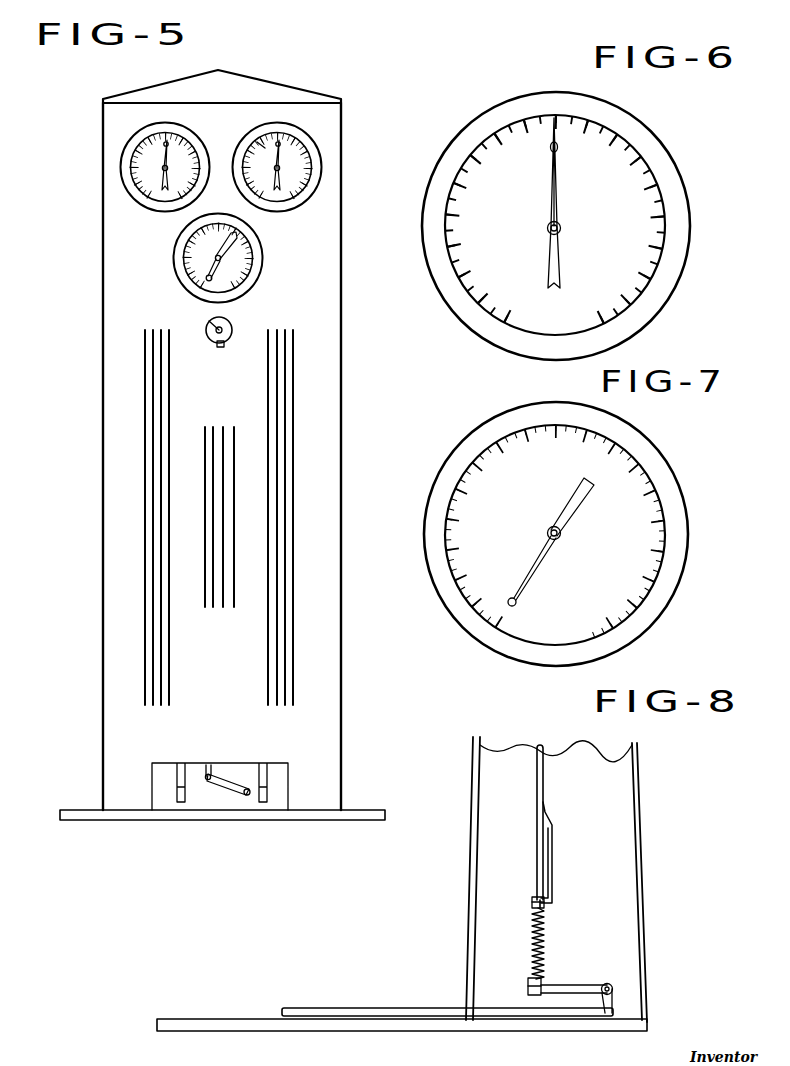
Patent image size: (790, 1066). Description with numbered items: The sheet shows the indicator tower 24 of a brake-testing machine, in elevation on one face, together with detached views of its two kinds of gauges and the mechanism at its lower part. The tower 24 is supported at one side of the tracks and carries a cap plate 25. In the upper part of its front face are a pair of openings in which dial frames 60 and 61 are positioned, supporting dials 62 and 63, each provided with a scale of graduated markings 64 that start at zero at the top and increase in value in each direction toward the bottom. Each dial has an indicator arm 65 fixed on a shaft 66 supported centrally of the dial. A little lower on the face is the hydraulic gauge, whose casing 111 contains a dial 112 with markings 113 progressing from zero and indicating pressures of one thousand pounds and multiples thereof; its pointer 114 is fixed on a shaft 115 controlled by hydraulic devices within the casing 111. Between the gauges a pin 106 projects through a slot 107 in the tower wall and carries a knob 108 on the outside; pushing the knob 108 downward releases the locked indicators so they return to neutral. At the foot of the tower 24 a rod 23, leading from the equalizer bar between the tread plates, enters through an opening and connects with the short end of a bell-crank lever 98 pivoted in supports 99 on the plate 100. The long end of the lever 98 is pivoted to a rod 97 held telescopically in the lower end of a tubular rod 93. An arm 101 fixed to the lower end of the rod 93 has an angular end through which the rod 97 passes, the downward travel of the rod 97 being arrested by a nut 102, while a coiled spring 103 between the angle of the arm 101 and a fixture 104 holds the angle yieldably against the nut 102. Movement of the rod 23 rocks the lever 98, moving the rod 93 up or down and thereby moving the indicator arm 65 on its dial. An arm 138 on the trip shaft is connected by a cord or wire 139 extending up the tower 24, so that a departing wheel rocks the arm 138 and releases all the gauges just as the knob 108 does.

In FIG. 8, the rod 23 is at (380, 1007).
In FIG. 5, the tower 24 is at (196, 456).
In FIG. 8, the tower 24 is at (627, 812).
In FIG. 5, the cap plate 25 is at (273, 88).
In FIG. 5, the dial frame 60 is at (120, 160).
In FIG. 5, the dial frame 61 is at (320, 157).
In FIG. 6, the dial frame 61 is at (673, 197).
In FIG. 5, the dial 62 is at (140, 168).
In FIG. 5, the dial 63 is at (293, 171).
In FIG. 6, the dial 63 is at (555, 225).
In FIG. 5, the graduated markings 64 is at (260, 143).
In FIG. 6, the graduated markings 64 is at (507, 130).
In FIG. 5, the indicator arm 65 is at (280, 157).
In FIG. 6, the indicator arm 65 is at (551, 184).
In FIG. 6, the shaft 66 is at (547, 231).
In FIG. 8, the tubular rod 93 is at (547, 765).
In FIG. 8, the rod 97 is at (537, 865).
In FIG. 8, the bell-crank lever 98 is at (583, 982).
In FIG. 8, the supports 99 is at (617, 993).
In FIG. 5, the plate 100 is at (298, 815).
In FIG. 8, the plate 100 is at (435, 1030).
In FIG. 8, the arm 101 is at (557, 847).
In FIG. 8, the nut 102 is at (530, 902).
In FIG. 8, the coiled spring 103 is at (532, 937).
In FIG. 8, the fixture 104 is at (528, 983).
In FIG. 5, the pin 106 is at (211, 323).
In FIG. 5, the slot 107 is at (217, 345).
In FIG. 5, the knob 108 is at (234, 320).
In FIG. 5, the casing 111 is at (263, 262).
In FIG. 7, the casing 111 is at (482, 423).
In FIG. 5, the dial 112 is at (237, 258).
In FIG. 7, the dial 112 is at (610, 523).
In FIG. 7, the markings 113 is at (660, 557).
In FIG. 5, the pointer 114 is at (215, 257).
In FIG. 7, the pointer 114 is at (548, 553).
In FIG. 7, the shaft 115 is at (548, 530).
In FIG. 5, the arm 138 is at (231, 792).
In FIG. 5, the cord or wire 139 is at (205, 775).